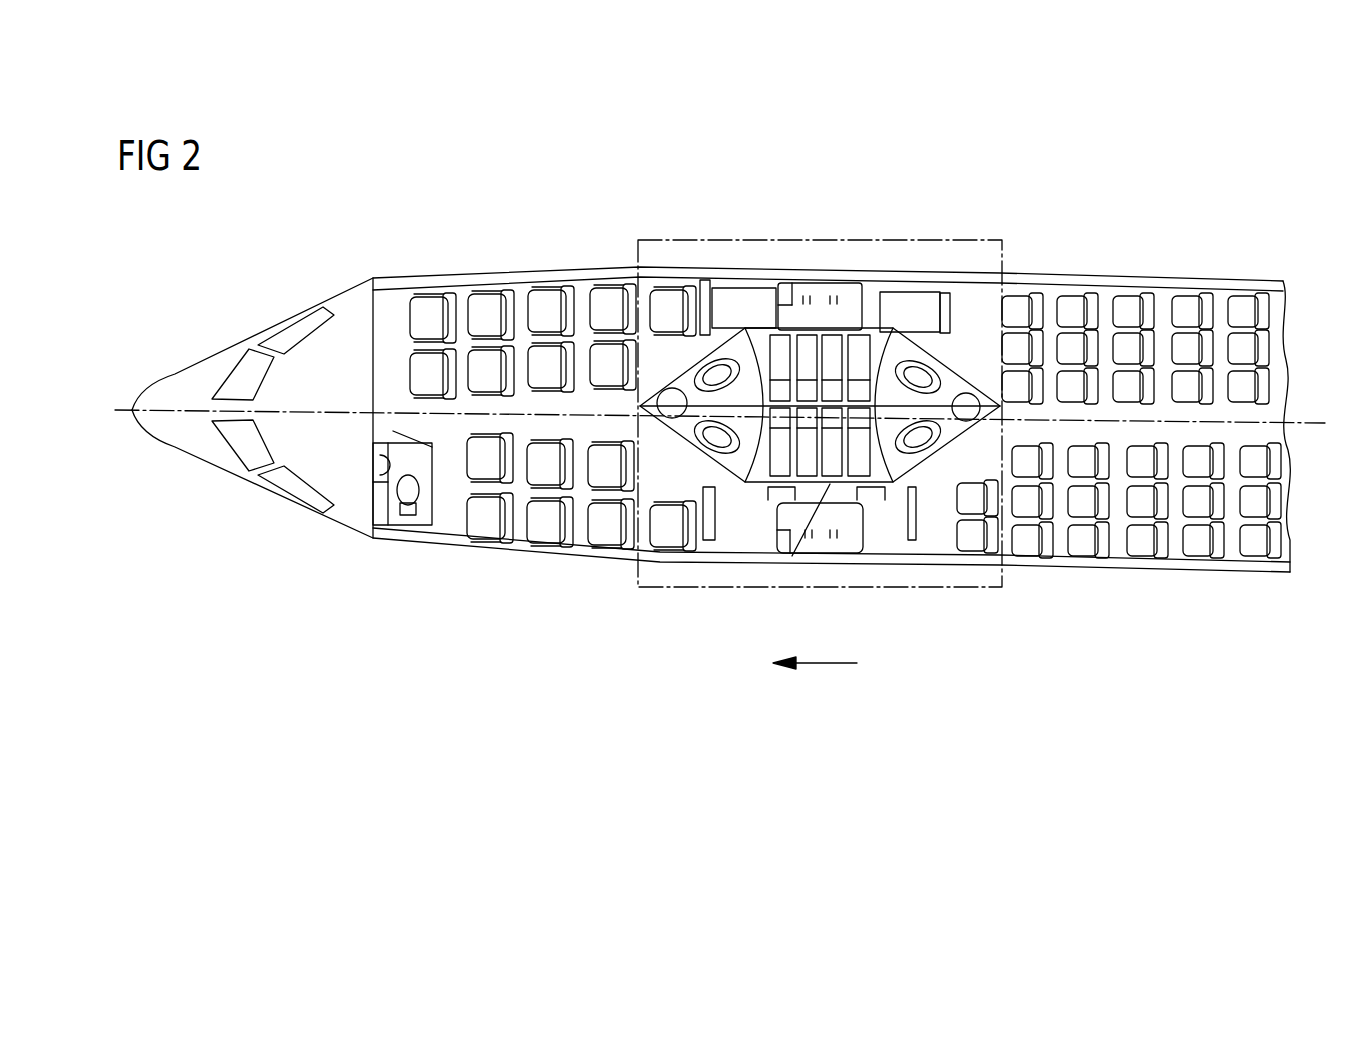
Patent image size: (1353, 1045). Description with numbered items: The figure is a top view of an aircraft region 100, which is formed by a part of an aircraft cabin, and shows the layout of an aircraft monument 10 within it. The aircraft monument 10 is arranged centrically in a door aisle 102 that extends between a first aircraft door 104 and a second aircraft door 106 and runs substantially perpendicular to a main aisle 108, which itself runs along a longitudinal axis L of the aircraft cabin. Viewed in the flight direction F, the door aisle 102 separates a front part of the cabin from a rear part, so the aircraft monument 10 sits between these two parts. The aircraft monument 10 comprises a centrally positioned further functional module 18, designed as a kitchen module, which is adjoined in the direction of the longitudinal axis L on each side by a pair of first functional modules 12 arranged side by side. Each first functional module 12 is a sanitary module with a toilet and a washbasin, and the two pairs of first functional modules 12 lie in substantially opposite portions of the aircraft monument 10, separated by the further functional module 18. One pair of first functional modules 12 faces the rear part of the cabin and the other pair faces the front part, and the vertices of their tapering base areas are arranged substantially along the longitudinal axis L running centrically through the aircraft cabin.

The aircraft monument 10 is at (943, 358).
The first functional module 12 is at (730, 345).
The further functional module 18 is at (797, 558).
The aircraft region 100 is at (884, 204).
The door aisle 102 is at (751, 300).
The first aircraft door 104 is at (830, 282).
The second aircraft door 106 is at (833, 560).
The main aisle 108 is at (553, 410).
The flight direction F is at (822, 663).
The longitudinal axis L is at (1307, 428).